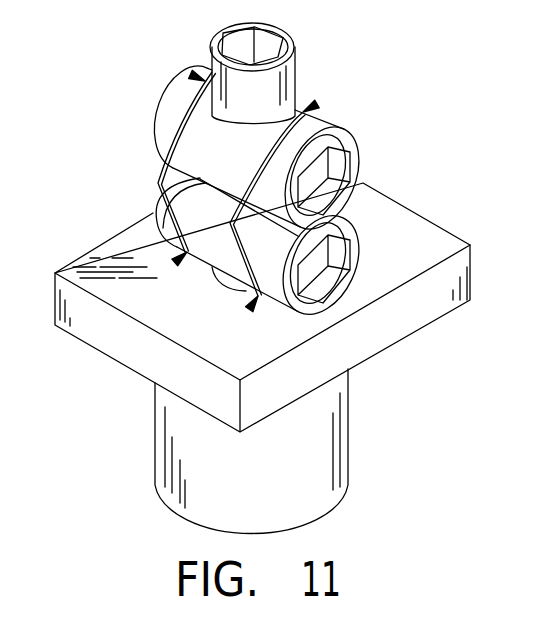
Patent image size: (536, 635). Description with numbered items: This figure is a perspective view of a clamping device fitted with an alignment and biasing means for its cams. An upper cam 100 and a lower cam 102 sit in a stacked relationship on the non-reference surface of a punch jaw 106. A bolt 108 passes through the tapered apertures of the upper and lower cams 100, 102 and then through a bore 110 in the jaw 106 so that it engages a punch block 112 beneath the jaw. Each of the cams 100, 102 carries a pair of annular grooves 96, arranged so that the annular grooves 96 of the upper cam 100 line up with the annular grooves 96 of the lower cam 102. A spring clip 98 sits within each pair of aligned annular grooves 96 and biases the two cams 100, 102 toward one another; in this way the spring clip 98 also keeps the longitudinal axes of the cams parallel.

The annular grooves 96 is at (190, 74).
The spring clip 98 is at (162, 168).
The upper cam 100 is at (357, 163).
The lower cam 102 is at (353, 259).
The punch jaw 106 is at (127, 248).
The bolt 108 is at (287, 72).
The bore 110 is at (222, 280).
The punch block 112 is at (325, 500).